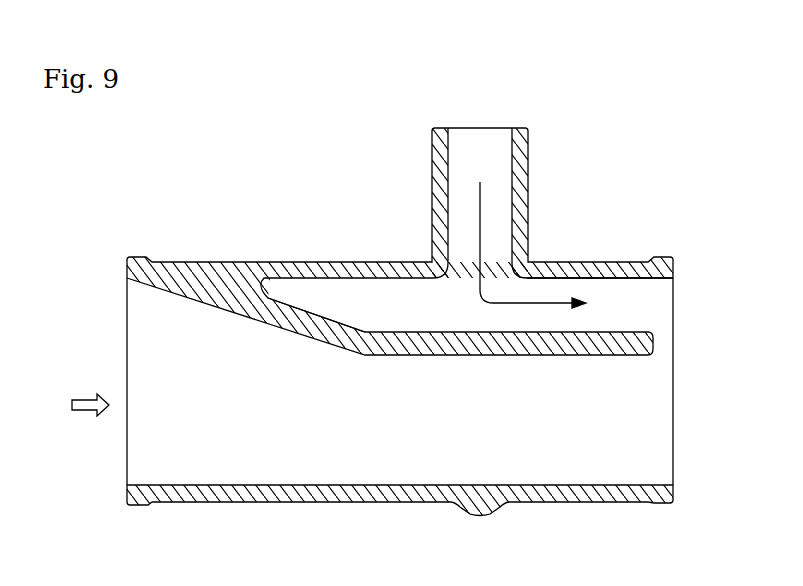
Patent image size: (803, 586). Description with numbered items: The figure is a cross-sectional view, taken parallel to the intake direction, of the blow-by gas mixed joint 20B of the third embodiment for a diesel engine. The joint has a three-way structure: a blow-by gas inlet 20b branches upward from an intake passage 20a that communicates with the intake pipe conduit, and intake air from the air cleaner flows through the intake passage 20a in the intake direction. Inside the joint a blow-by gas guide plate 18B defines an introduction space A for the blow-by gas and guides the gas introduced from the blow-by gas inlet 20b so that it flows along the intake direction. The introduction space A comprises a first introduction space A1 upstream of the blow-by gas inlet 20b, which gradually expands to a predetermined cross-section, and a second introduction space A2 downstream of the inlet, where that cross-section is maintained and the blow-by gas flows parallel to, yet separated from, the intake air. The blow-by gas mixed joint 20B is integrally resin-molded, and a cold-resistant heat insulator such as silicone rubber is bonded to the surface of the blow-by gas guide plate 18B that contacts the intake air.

The blow-by gas mixed joint 20B is at (379, 286).
The intake passage 20a is at (570, 262).
The blow-by gas inlet 20b is at (530, 172).
The blow-by gas guide plate 18B is at (567, 357).
The introduction space A is at (397, 300).
The first introduction space A1 is at (335, 300).
The second introduction space A2 is at (620, 297).